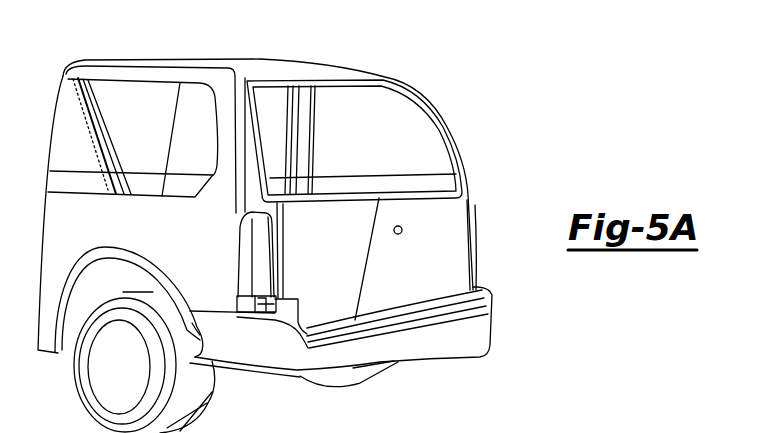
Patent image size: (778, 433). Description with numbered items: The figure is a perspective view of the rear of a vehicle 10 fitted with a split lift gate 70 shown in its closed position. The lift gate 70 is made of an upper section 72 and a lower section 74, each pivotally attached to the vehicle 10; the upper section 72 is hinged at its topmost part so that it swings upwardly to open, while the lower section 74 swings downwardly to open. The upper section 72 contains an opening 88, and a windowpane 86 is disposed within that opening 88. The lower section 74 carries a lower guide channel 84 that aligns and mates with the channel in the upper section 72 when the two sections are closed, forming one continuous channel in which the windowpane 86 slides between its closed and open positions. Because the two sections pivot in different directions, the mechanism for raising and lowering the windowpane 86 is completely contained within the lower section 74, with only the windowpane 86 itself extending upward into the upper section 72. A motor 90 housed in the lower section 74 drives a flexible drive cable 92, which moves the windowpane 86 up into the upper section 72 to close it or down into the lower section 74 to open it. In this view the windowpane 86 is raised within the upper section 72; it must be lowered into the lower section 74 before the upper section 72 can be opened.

The vehicle 10 is at (235, 68).
The lift gate 70 is at (461, 78).
The upper section 72 is at (453, 143).
The lower section 74 is at (447, 243).
The lower guide channel 84 is at (296, 230).
The windowpane 86 is at (380, 104).
The opening 88 is at (328, 102).
The motor 90 is at (292, 312).
The flexible drive cable 92 is at (266, 308).